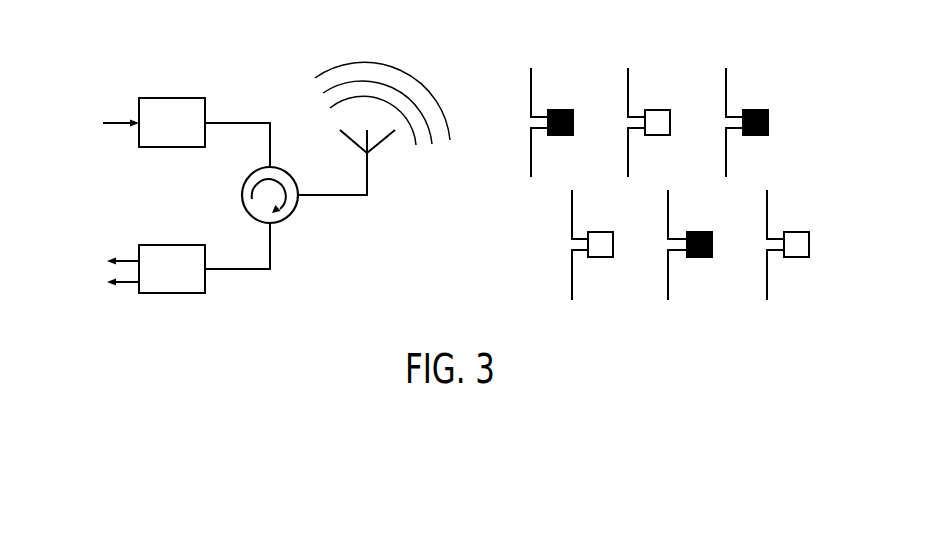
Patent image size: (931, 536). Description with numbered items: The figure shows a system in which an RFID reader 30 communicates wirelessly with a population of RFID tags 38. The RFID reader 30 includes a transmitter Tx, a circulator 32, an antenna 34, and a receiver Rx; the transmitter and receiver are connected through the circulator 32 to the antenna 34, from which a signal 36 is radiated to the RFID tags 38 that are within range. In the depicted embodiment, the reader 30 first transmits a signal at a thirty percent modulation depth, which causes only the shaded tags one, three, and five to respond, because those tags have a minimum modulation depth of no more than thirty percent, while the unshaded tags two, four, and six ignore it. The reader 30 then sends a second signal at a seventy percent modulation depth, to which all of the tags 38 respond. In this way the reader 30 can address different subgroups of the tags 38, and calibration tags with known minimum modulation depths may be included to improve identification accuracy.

The RFID reader 30 is at (156, 188).
The circulator 32 is at (293, 213).
The antenna 34 is at (368, 174).
The signal 36 is at (366, 68).
The RFID tags 38 is at (842, 60).